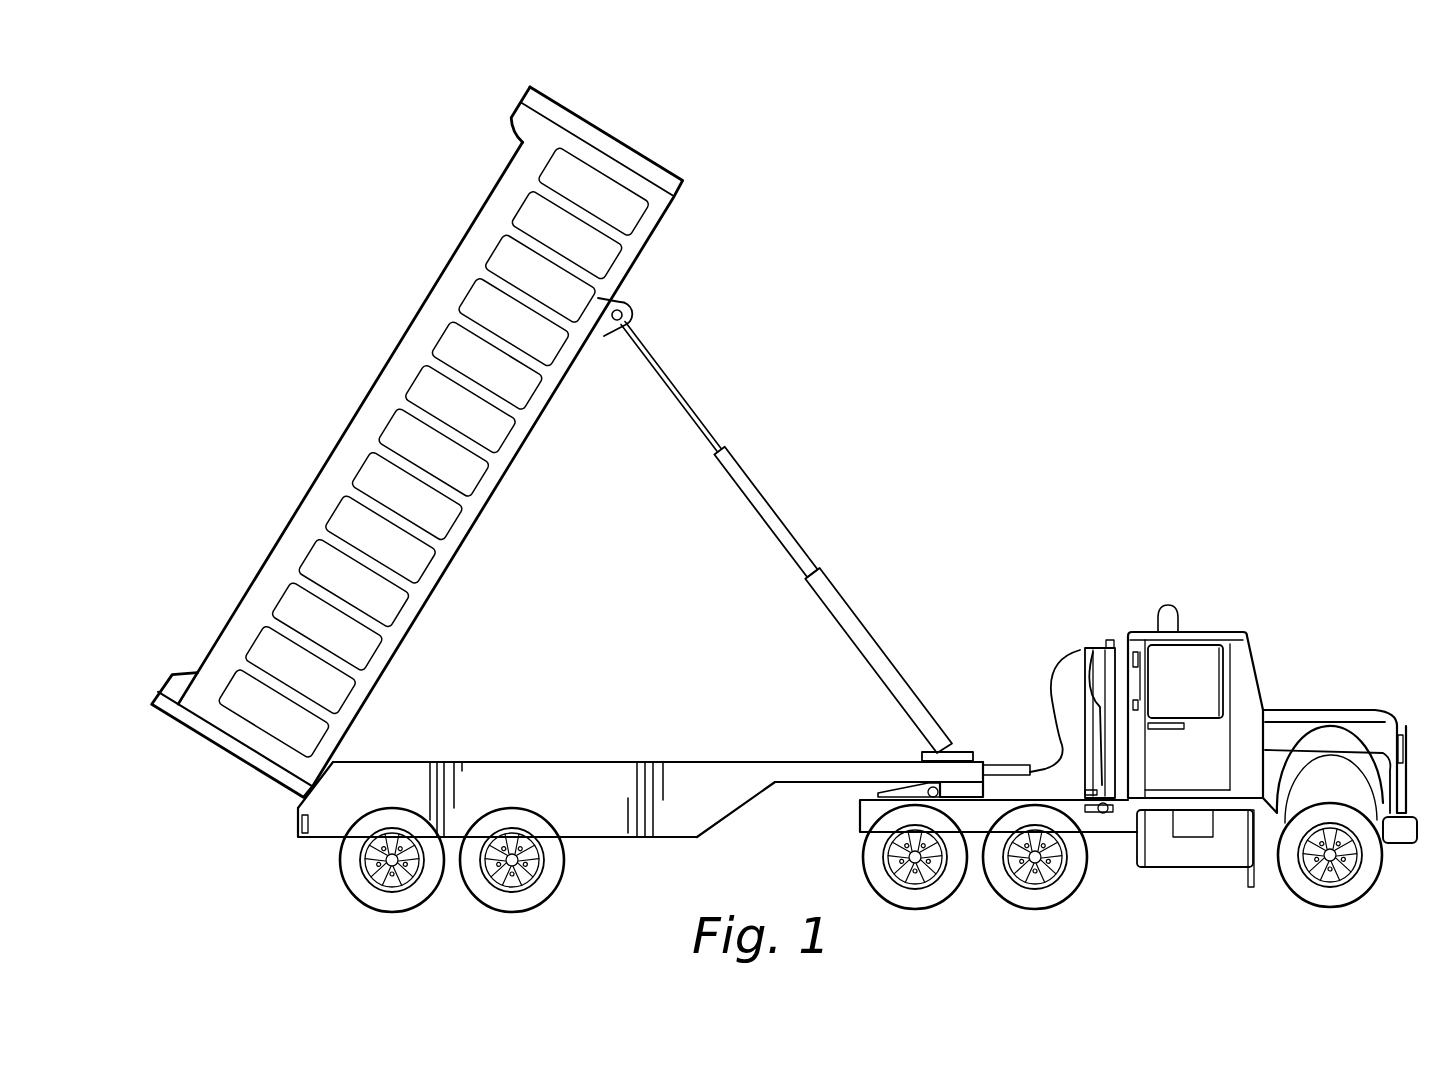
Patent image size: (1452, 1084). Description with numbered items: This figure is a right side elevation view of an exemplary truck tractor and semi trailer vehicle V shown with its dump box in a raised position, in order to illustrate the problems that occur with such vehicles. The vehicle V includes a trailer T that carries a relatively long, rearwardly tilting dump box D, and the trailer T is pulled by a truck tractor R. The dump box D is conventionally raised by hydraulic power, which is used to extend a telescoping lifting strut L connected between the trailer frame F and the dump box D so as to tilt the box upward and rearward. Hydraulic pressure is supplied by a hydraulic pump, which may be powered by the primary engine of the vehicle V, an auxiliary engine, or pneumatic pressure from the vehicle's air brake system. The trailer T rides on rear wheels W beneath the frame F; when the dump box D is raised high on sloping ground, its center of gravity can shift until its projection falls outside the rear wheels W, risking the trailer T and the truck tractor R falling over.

The dump box D is at (379, 384).
The telescoping lifting strut L is at (786, 521).
The trailer frame F is at (607, 816).
The trailer T is at (747, 803).
The rear wheels W is at (475, 927).
The vehicle V is at (1138, 641).
The truck tractor R is at (1273, 702).